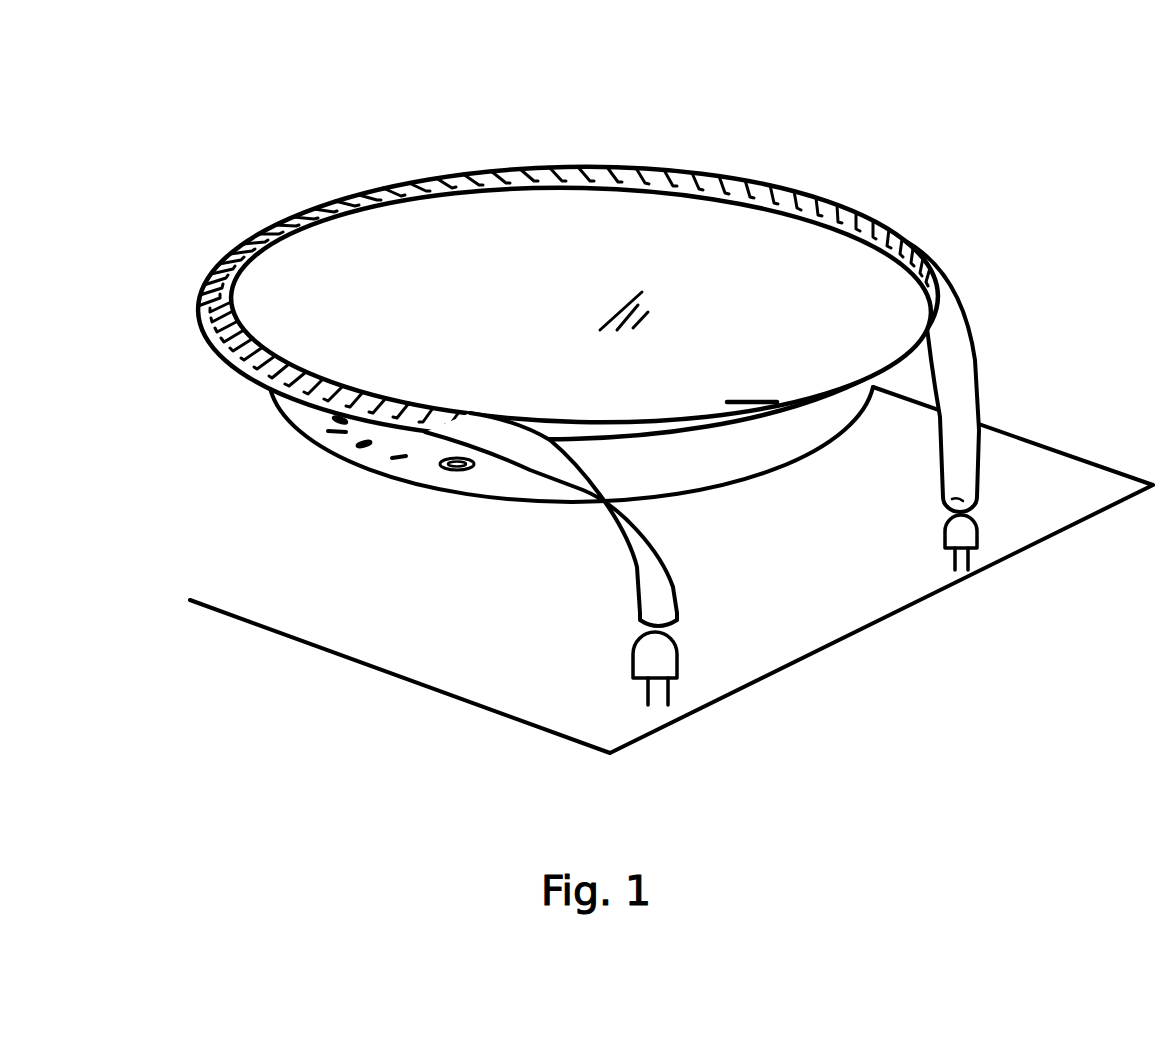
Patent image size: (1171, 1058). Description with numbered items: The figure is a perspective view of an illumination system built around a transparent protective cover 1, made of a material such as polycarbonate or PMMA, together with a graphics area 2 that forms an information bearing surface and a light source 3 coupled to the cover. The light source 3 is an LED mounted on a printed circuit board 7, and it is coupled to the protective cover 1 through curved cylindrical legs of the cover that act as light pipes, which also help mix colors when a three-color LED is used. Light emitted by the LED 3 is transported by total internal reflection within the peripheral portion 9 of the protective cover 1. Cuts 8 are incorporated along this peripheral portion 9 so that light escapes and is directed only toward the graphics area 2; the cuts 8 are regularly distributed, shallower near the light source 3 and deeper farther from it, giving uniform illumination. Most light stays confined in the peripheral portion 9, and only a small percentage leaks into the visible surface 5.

The protective cover 1 is at (955, 249).
The graphics area 2 is at (457, 490).
The light source 3 is at (670, 653).
The surface 5 is at (777, 402).
The printed circuit board 7 is at (1057, 502).
The cuts 8 is at (423, 181).
The peripheral portion 9 is at (228, 345).